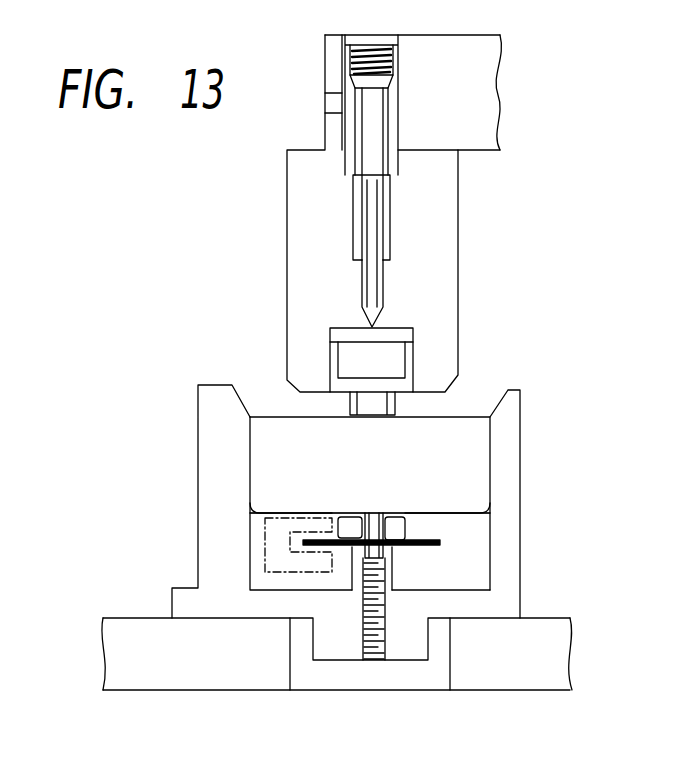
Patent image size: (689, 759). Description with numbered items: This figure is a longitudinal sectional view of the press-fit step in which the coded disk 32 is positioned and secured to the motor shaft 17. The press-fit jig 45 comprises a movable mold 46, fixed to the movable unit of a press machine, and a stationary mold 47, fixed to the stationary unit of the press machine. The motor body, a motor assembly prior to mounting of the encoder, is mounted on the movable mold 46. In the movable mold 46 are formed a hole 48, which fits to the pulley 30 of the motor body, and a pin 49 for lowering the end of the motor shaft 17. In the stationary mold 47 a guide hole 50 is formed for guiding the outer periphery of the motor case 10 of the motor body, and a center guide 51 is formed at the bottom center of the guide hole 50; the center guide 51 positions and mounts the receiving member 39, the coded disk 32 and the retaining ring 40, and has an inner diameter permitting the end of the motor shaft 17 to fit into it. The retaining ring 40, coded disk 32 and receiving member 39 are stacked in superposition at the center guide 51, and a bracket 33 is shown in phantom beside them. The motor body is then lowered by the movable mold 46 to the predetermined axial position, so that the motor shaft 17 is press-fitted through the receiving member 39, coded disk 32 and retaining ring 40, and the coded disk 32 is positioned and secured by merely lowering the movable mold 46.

The press-fit jig 45 is at (356, 225).
The movable mold 46 is at (438, 247).
The pin 49 is at (388, 290).
The hole 48 is at (358, 345).
The pulley 30 is at (335, 352).
The motor case 10 is at (265, 450).
The guide hole 50 is at (490, 458).
The stationary mold 47 is at (508, 490).
The center guide 51 is at (393, 570).
The motor shaft 17 is at (367, 513).
The receiving member 39 is at (397, 527).
The bracket 33 is at (280, 532).
The coded disk 32 is at (440, 530).
The retaining ring 40 is at (354, 552).